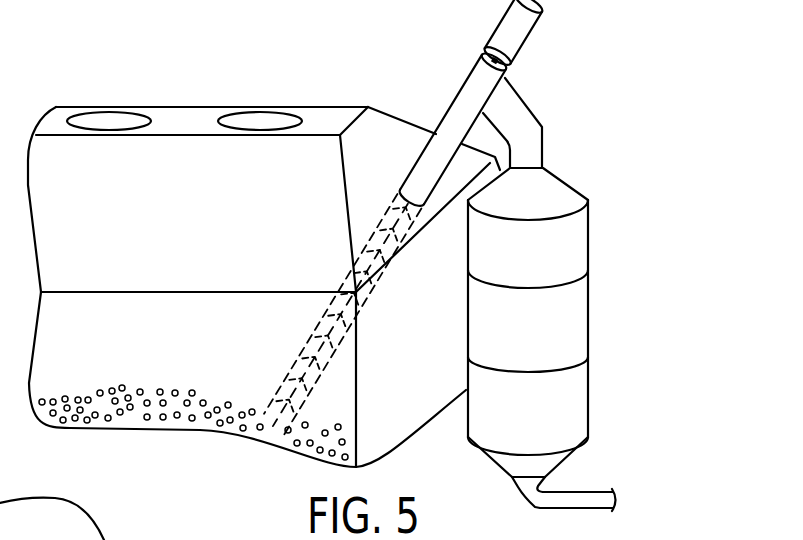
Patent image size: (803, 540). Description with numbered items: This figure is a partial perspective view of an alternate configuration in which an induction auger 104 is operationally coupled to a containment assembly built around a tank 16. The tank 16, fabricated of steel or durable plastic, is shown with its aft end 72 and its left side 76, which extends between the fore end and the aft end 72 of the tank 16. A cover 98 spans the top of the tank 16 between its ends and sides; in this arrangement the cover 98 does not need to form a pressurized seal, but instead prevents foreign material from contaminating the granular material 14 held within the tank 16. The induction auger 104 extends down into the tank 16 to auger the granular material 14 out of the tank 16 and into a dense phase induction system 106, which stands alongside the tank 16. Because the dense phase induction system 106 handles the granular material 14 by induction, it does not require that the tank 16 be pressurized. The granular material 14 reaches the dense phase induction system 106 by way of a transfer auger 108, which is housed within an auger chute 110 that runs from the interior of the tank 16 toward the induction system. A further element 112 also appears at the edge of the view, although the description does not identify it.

The tank 16 is at (230, 78).
The cover 98 is at (147, 228).
The left side 76 is at (91, 333).
The aft end 72 is at (403, 395).
The granular material 14 is at (111, 387).
The transfer auger 108 is at (310, 338).
The auger chute 110 is at (451, 99).
The induction auger 104 is at (493, 31).
The dense phase induction system 106 is at (600, 292).
The adjacent component 112 is at (8, 537).